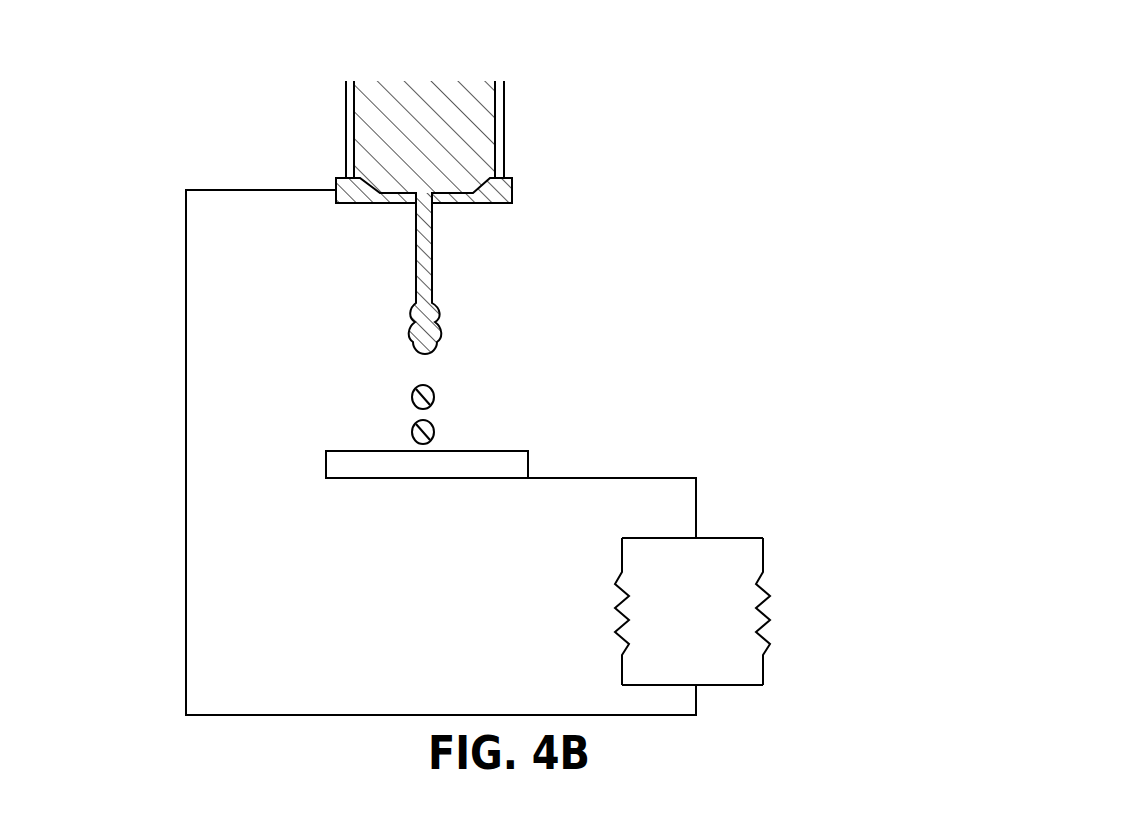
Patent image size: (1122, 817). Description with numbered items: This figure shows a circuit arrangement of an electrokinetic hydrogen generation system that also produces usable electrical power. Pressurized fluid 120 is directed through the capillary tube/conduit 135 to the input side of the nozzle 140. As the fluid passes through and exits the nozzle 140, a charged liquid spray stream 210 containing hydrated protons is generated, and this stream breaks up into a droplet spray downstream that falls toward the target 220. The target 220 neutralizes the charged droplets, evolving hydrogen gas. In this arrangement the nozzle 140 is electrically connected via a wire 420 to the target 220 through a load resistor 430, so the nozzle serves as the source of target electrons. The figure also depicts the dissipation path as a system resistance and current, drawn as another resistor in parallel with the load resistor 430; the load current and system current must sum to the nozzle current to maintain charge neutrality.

The pressurized fluid 120 is at (428, 113).
The capillary tube/conduit 135 is at (346, 125).
The nozzle 140 is at (512, 188).
The charged liquid spray stream 210 is at (432, 263).
The target 220 is at (326, 468).
The wire 420 is at (186, 427).
The load resistor 430 is at (763, 555).